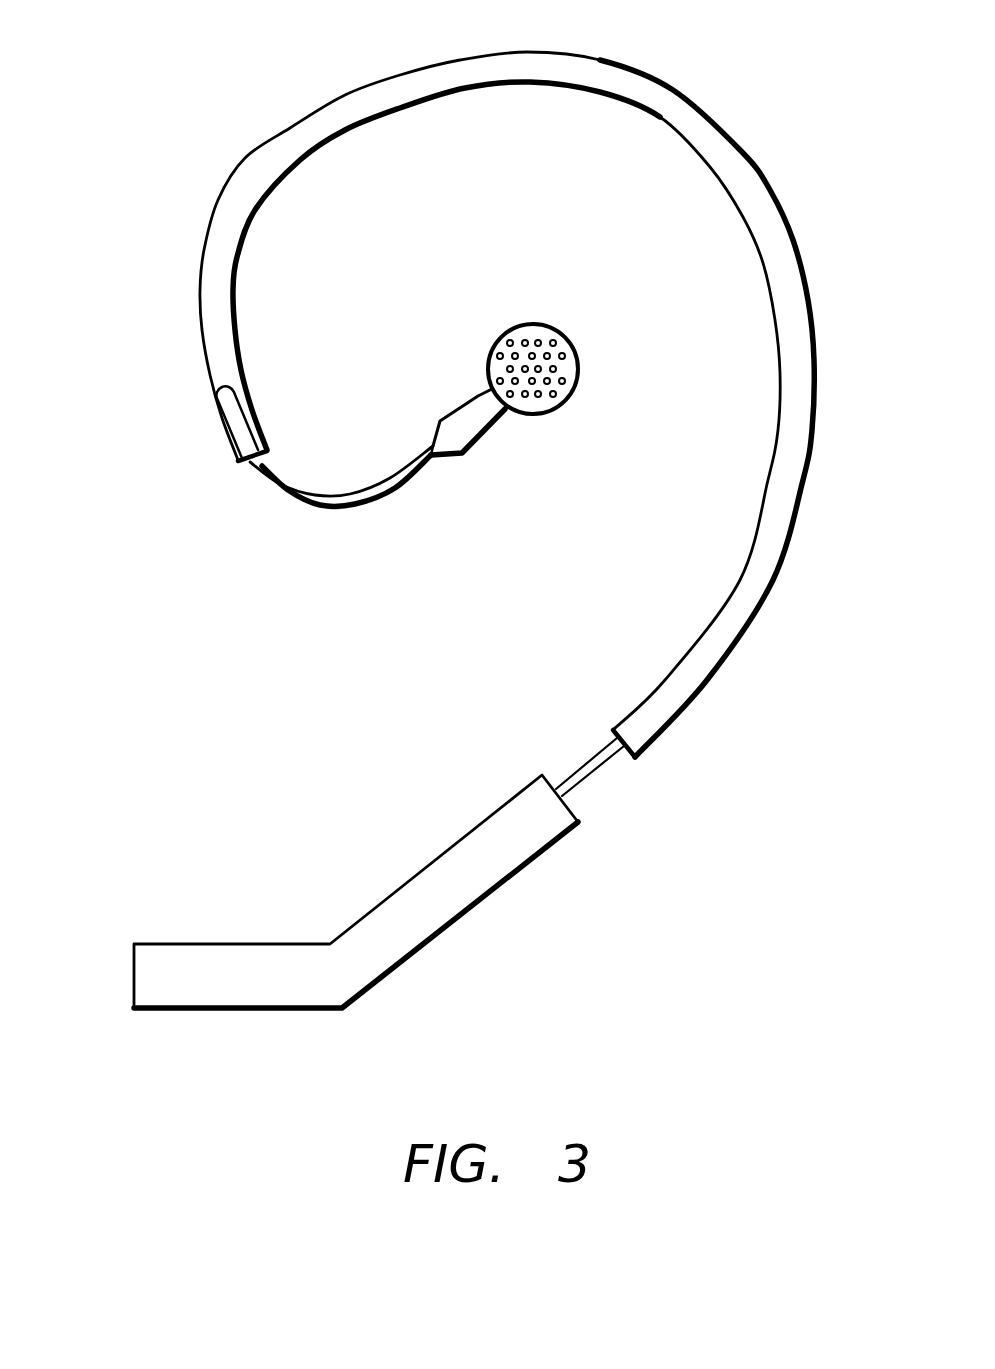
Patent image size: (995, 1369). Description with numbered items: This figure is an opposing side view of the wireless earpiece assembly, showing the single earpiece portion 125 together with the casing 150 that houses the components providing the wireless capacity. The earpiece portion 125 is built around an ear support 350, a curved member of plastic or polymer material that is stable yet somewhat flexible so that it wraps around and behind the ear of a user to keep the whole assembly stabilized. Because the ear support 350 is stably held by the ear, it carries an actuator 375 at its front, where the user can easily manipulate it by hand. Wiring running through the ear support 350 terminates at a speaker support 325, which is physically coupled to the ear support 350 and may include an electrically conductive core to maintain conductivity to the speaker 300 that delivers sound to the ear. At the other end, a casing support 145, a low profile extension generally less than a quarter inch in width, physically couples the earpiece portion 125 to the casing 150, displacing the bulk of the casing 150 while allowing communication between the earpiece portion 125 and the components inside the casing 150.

The earpiece portion 125 is at (188, 60).
The ear support 350 is at (768, 192).
The actuator 375 is at (226, 434).
The speaker support 325 is at (335, 508).
The speaker 300 is at (528, 334).
The casing support 145 is at (596, 783).
The casing 150 is at (527, 910).